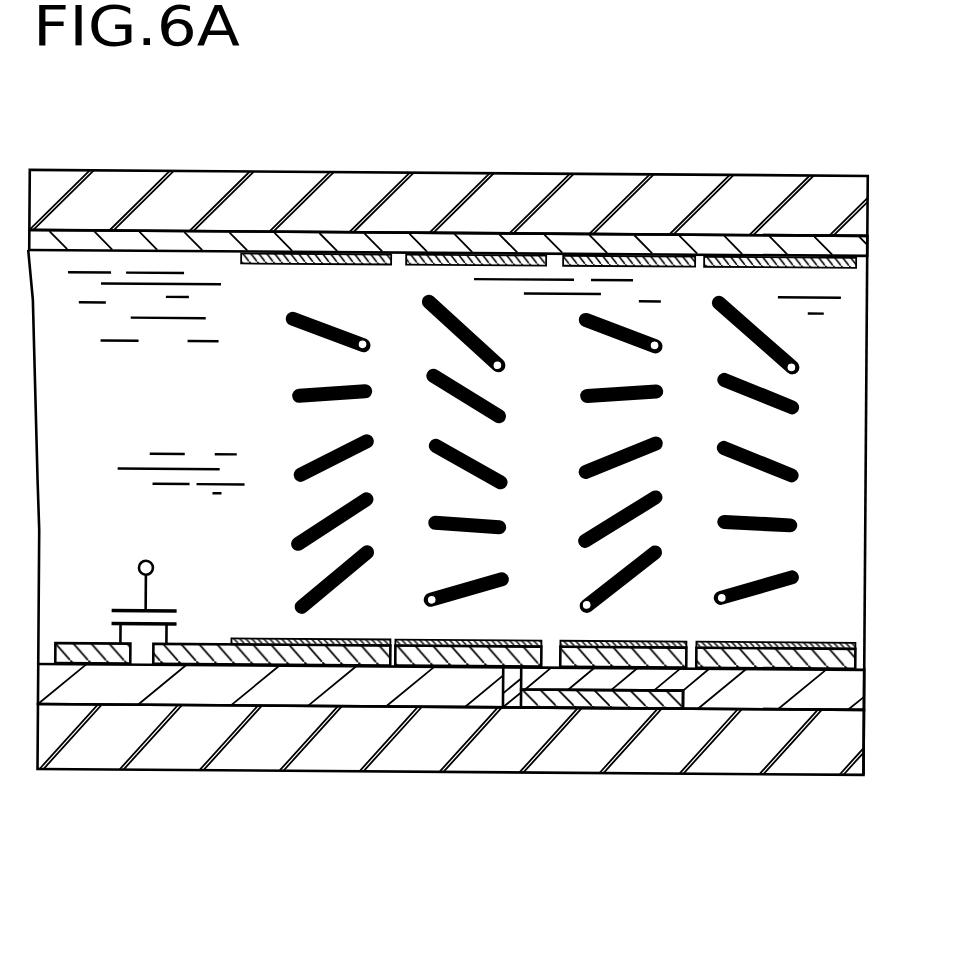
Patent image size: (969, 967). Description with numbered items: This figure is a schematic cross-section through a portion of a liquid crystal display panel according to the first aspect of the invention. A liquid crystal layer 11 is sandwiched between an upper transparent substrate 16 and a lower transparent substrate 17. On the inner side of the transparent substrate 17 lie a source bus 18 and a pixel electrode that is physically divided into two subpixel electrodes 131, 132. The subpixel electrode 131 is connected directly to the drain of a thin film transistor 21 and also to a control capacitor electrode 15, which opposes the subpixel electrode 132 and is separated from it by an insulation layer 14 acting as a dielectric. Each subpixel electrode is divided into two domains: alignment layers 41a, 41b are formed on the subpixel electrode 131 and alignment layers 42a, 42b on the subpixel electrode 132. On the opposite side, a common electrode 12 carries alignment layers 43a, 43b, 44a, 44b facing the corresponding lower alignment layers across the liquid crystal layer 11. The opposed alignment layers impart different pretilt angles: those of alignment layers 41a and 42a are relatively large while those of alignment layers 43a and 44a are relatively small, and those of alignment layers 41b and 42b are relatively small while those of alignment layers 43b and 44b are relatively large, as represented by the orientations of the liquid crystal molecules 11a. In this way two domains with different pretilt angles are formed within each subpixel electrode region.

The liquid crystal layer 11 is at (376, 291).
The liquid crystal molecules 11a is at (462, 576).
The common electrode 12 is at (525, 244).
The subpixel electrode 131 is at (260, 656).
The subpixel electrode 132 is at (725, 658).
The insulation layer 14 is at (183, 686).
The control capacitor electrode 15 is at (563, 699).
The transparent substrate 16 is at (197, 184).
The transparent substrate 17 is at (373, 745).
The source bus 18 is at (92, 677).
The thin film transistor 21 is at (105, 613).
The alignment layer 41a is at (252, 636).
The alignment layer 41b is at (453, 650).
The alignment layer 42a is at (627, 652).
The alignment layer 42b is at (800, 650).
The alignment layer 43a is at (316, 253).
The alignment layer 43b is at (471, 254).
The alignment layer 44a is at (624, 251).
The alignment layer 44b is at (784, 255).